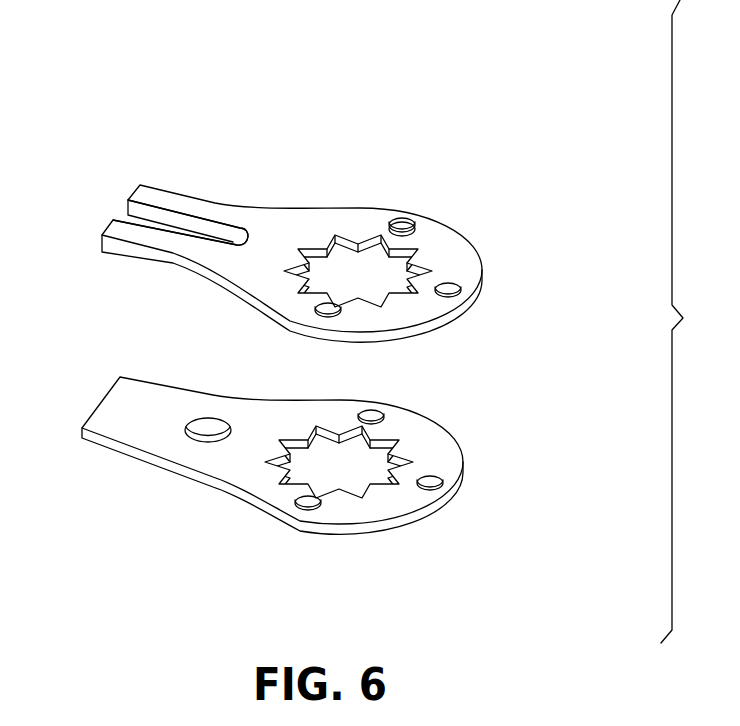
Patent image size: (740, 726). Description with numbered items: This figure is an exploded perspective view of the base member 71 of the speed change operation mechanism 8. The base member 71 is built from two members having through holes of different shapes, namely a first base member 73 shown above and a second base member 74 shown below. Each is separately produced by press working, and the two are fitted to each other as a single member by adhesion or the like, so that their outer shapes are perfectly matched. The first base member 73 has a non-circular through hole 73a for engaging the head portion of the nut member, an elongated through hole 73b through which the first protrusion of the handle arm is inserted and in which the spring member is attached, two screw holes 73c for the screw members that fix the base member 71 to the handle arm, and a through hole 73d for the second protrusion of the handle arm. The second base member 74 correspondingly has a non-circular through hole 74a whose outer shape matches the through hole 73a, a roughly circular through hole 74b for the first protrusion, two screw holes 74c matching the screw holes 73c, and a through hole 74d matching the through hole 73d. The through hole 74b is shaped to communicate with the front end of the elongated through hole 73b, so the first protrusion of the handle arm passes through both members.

The speed change operation mechanism 8 is at (506, 103).
The base member 71 is at (492, 200).
The first base member 73 is at (480, 313).
The through hole 73a is at (320, 247).
The through hole 73b is at (180, 220).
The screw holes 73c is at (402, 222).
The through hole 73d is at (458, 291).
The second base member 74 is at (467, 515).
The through hole 74a is at (310, 428).
The through hole 74b is at (197, 427).
The screw holes 74c is at (383, 423).
The through hole 74d is at (460, 477).